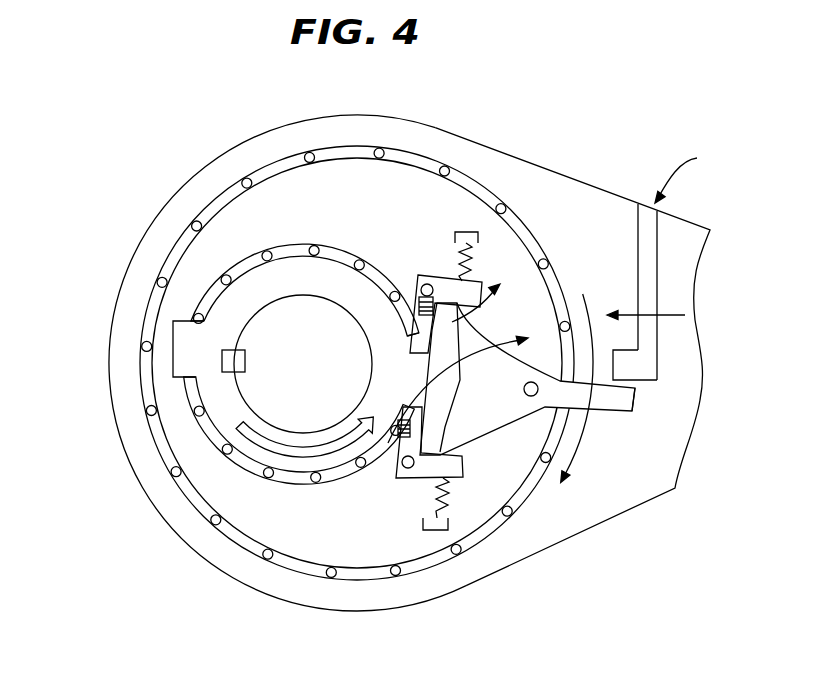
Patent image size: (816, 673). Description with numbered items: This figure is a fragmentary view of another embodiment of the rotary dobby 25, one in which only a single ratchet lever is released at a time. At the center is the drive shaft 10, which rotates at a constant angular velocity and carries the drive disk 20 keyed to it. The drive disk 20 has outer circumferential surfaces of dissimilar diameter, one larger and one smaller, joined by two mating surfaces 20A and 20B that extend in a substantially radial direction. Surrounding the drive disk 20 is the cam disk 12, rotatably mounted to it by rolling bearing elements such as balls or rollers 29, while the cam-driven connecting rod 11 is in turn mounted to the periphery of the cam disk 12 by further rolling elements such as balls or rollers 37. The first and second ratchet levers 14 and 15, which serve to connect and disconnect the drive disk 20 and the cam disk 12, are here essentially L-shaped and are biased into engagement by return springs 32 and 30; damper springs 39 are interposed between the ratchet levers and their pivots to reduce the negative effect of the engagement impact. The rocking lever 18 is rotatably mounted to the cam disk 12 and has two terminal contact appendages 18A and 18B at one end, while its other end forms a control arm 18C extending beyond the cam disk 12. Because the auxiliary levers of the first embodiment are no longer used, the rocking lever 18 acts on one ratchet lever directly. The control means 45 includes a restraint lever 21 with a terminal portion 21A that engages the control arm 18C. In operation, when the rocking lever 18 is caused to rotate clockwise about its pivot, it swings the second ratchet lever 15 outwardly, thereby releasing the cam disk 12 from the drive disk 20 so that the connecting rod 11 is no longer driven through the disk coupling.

The drive shaft 10 is at (250, 342).
The connecting rod 11 is at (682, 268).
The cam disk 12 is at (208, 483).
The first ratchet lever 14 is at (467, 473).
The second ratchet lever 15 is at (457, 232).
The rocking lever 18 is at (490, 410).
The terminal contact appendage 18A is at (437, 457).
The terminal contact appendage 18B is at (470, 300).
The control arm 18C is at (645, 407).
The drive disk 20 is at (277, 273).
The mating surface 20A is at (370, 325).
The mating surface 20B is at (397, 440).
The restraint lever 21 is at (650, 238).
The terminal portion 21A is at (683, 374).
The rotary dobby 25 is at (80, 355).
The rolling bearing elements 29 is at (197, 415).
The return spring 30 is at (458, 305).
The return spring 32 is at (442, 530).
The rolling elements 37 is at (143, 347).
The damper spring 39 is at (408, 346).
The control means 45 is at (689, 174).